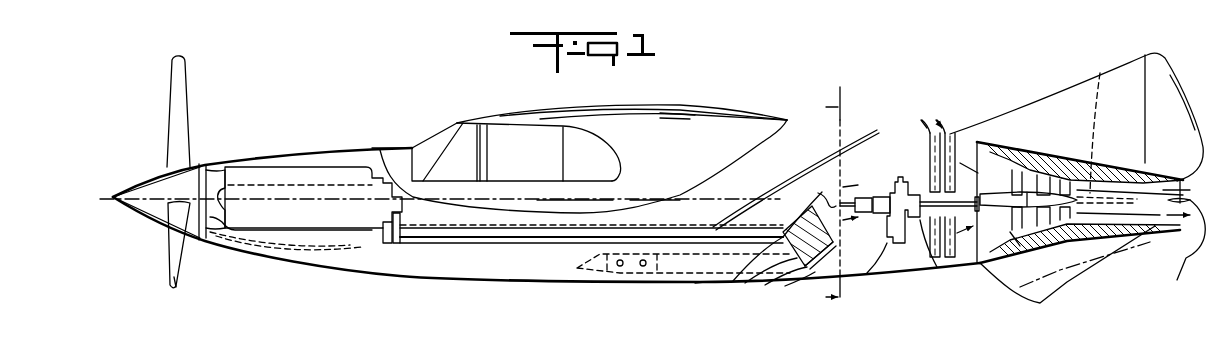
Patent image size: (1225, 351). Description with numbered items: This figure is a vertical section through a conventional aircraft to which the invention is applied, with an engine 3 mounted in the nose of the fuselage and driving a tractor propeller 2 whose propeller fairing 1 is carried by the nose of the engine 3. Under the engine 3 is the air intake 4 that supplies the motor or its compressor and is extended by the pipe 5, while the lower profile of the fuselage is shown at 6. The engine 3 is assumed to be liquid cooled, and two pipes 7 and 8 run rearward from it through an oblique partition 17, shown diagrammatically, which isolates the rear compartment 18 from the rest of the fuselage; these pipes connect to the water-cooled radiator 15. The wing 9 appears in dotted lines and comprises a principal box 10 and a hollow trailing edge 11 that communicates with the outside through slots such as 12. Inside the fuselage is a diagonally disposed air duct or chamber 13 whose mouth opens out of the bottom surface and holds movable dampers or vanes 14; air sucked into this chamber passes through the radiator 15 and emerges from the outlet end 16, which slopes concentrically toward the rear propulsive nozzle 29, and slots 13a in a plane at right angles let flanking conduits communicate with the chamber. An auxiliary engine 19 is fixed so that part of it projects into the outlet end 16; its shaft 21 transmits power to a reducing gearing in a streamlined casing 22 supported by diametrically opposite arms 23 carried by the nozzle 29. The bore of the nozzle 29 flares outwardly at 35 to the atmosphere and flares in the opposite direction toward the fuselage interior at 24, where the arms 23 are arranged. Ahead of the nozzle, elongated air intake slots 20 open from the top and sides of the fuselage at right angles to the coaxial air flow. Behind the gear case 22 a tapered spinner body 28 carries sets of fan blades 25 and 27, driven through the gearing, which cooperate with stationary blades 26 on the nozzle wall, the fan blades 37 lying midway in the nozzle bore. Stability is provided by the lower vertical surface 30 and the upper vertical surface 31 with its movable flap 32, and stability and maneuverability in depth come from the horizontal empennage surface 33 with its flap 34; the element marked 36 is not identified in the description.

The propeller fairing 1 is at (135, 204).
The propeller 2 is at (176, 280).
The engine 3 is at (220, 208).
The air intake 4 is at (202, 241).
The pipe 5 is at (253, 243).
The lower profile of the fuselage 6 is at (330, 268).
The pipe 7 is at (417, 232).
The pipe 8 is at (455, 244).
The wing 9 is at (610, 273).
The principal box 10 is at (637, 274).
The hollow trailing edge 11 is at (703, 267).
The slots 12 is at (748, 260).
The air duct or chamber 13 is at (797, 271).
The slots 13a is at (809, 208).
The movable dampers or vanes 14 is at (790, 264).
The radiator 15 is at (812, 268).
The outlet end 16 is at (857, 193).
The oblique partition 17 is at (800, 170).
The rear compartment 18 is at (868, 258).
The auxiliary engine 19 is at (887, 245).
The air intake slots 20 is at (937, 273).
The shaft 21 is at (933, 262).
The streamlined casing 22 is at (1000, 207).
The arms 23 is at (1013, 230).
The flaring portion 24 is at (997, 139).
The fan blades 25 is at (1028, 180).
The stationary blades 26 is at (1040, 233).
The fan blades 27 is at (1057, 250).
The tapered spinner body 28 is at (1052, 188).
The nozzle 29 is at (1080, 240).
The lower vertical surface 30 is at (1120, 262).
The upper vertical surface 31 is at (1120, 80).
The movable flap 32 is at (1167, 83).
The horizontal empennage surface 33 is at (1098, 124).
The flap 34 is at (1110, 180).
The flaring portion 35 is at (1160, 218).
The exhaust jet 36 is at (1180, 241).
The fan blades 37 is at (1191, 240).